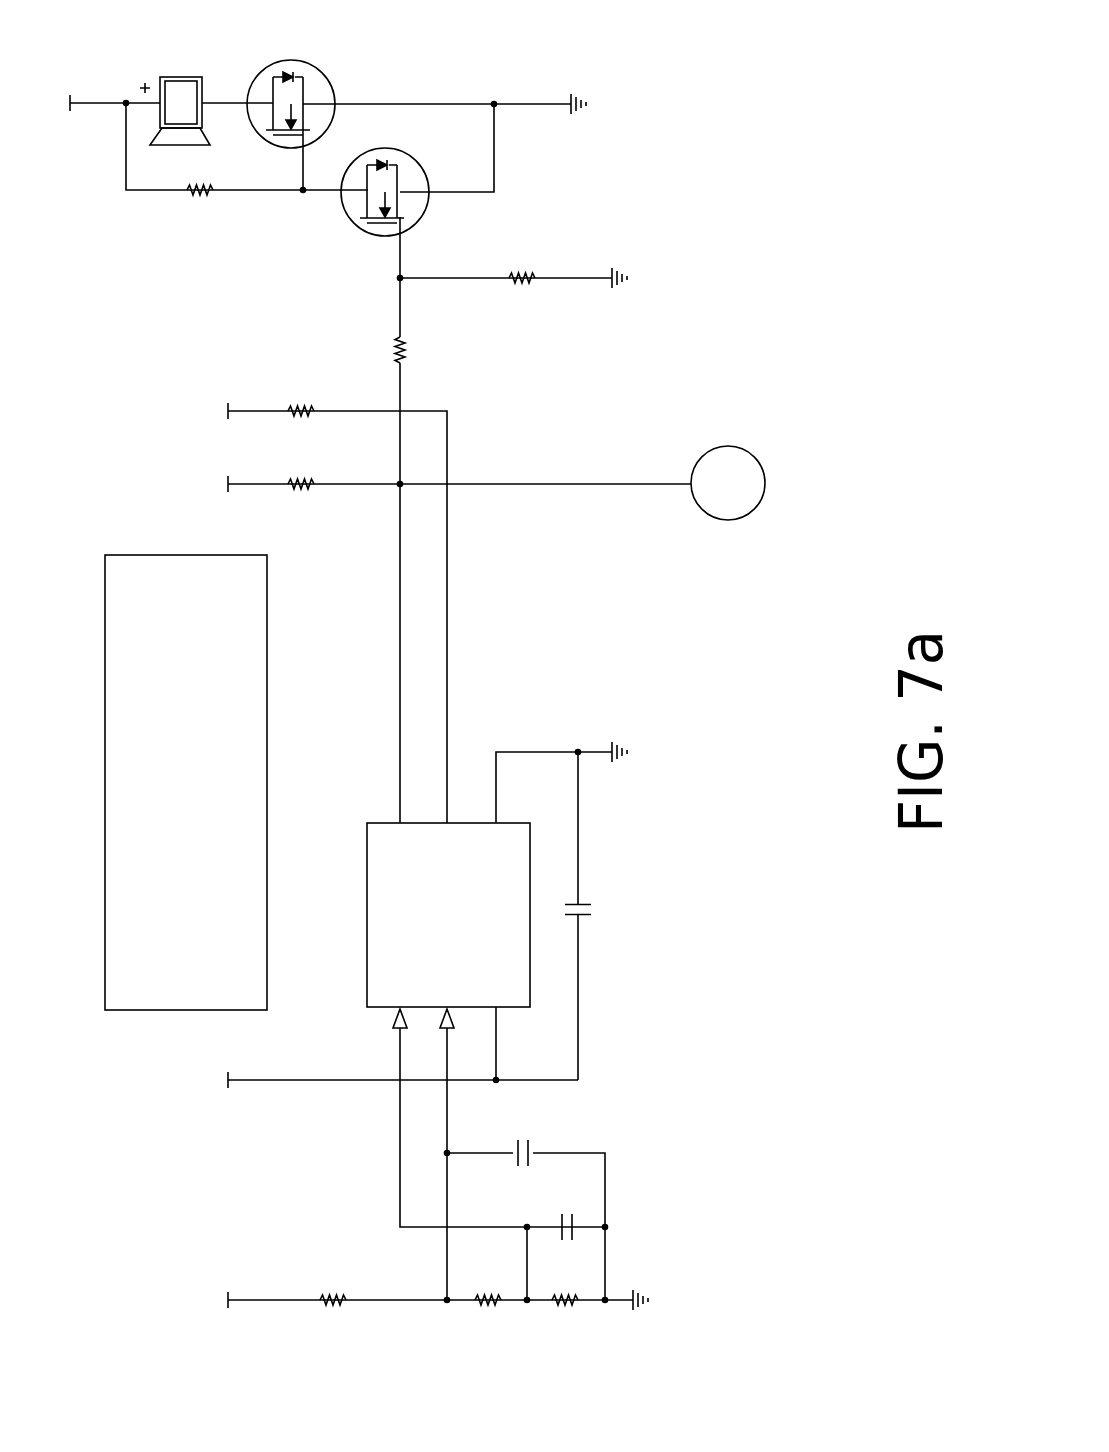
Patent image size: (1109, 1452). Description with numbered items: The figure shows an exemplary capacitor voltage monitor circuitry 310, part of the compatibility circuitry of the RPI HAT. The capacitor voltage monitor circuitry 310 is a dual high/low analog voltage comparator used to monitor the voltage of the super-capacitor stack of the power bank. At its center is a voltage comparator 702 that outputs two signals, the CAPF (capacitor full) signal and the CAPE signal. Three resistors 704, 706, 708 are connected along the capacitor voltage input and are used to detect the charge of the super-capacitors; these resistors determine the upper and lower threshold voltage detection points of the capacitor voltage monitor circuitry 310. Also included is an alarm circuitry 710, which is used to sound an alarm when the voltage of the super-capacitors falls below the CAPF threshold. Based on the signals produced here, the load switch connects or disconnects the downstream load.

The capacitor voltage monitor circuitry 310 is at (444, 688).
The voltage comparator 702 is at (354, 920).
The resistor 704 is at (347, 1330).
The resistor 706 is at (500, 1333).
The resistor 708 is at (579, 1333).
The alarm circuitry 710 is at (193, 5).